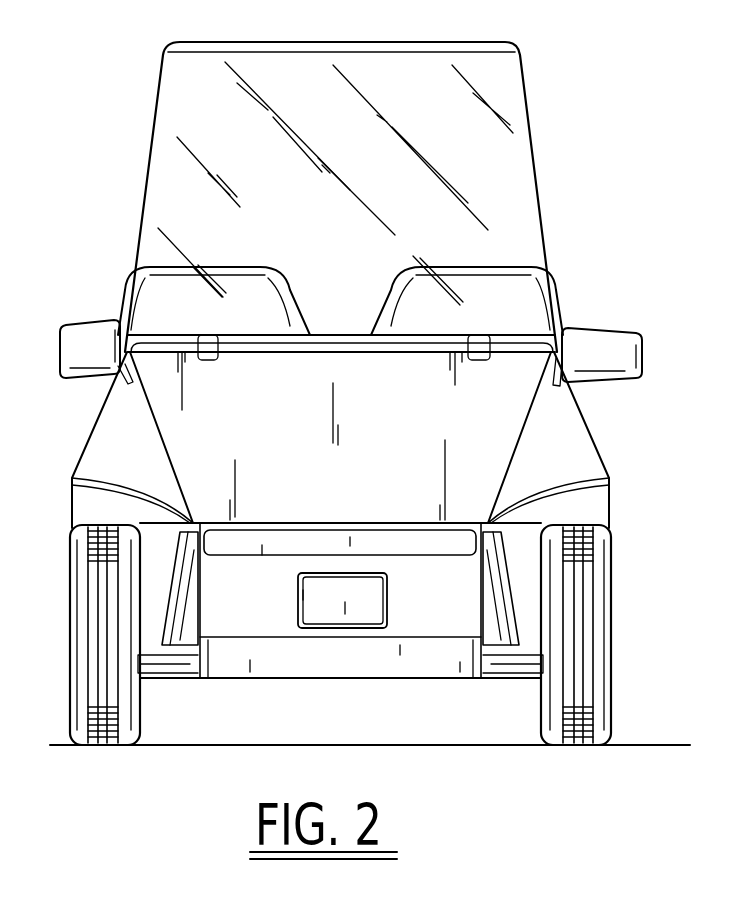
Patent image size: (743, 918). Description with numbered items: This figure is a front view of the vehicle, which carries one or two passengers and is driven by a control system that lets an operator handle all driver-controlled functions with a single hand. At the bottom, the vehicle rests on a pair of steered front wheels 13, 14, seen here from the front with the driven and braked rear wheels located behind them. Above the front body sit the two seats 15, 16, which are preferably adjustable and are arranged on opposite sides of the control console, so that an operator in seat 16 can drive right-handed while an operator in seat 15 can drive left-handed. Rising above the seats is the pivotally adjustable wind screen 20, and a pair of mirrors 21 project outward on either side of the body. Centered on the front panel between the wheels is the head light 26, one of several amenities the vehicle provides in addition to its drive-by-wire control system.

The front wheel 13 is at (131, 698).
The front wheel 14 is at (550, 708).
The seat 15 is at (254, 277).
The seat 16 is at (447, 277).
The wind screen 20 is at (521, 82).
The mirrors 21 is at (90, 333).
The head light 26 is at (388, 592).